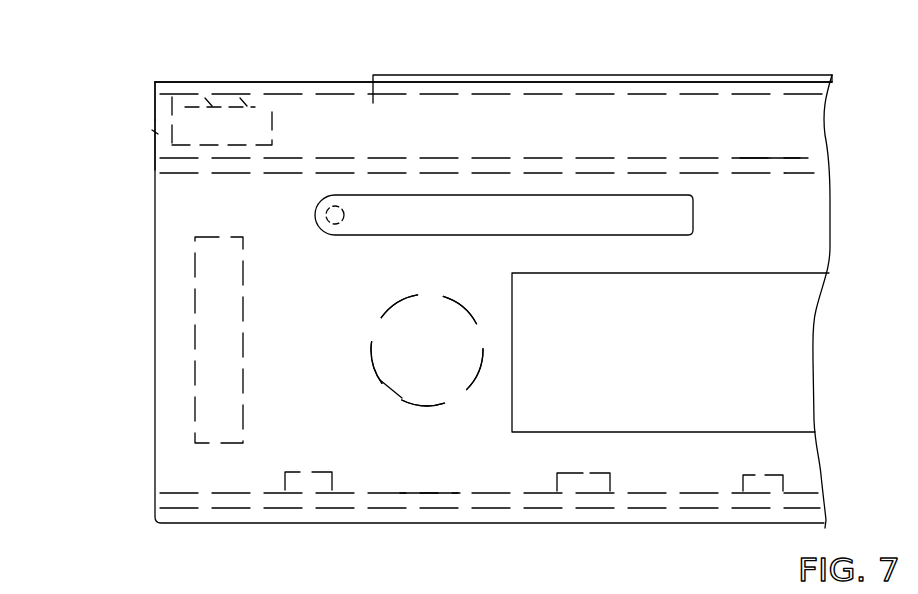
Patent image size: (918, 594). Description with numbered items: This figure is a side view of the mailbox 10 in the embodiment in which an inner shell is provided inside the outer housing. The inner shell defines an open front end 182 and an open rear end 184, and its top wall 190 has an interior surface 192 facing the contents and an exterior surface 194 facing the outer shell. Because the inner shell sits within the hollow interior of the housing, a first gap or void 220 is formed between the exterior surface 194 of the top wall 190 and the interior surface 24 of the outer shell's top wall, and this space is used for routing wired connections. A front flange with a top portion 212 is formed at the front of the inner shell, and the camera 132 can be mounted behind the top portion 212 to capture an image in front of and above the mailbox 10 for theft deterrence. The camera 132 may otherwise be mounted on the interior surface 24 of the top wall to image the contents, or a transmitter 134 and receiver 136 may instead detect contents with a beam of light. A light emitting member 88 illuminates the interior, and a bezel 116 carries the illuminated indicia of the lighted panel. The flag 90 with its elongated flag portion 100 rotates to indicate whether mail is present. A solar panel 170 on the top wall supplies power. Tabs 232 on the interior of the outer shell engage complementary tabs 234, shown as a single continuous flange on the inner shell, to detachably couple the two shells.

The mailbox 10 is at (583, 52).
The interior surface of the top wall 24 is at (315, 100).
The light emitting member 88 is at (383, 385).
The flag 90 is at (390, 240).
The elongated flag portion 100 is at (449, 220).
The bezel 116 is at (688, 365).
The camera 132 is at (260, 111).
The transmitter 134 is at (245, 345).
The receiver 136 is at (427, 350).
The solar panel 170 is at (478, 78).
The open front end 182 is at (108, 70).
The open rear end 184 is at (873, 53).
The top wall of the inner shell 190 is at (806, 159).
The interior surface of the inner shell top wall 192 is at (790, 173).
The exterior surface of the inner shell top wall 194 is at (767, 157).
The top portion of the front flange 212 is at (157, 131).
The first gap 220 is at (437, 143).
The tab 232 is at (320, 472).
The tab 234 is at (430, 491).